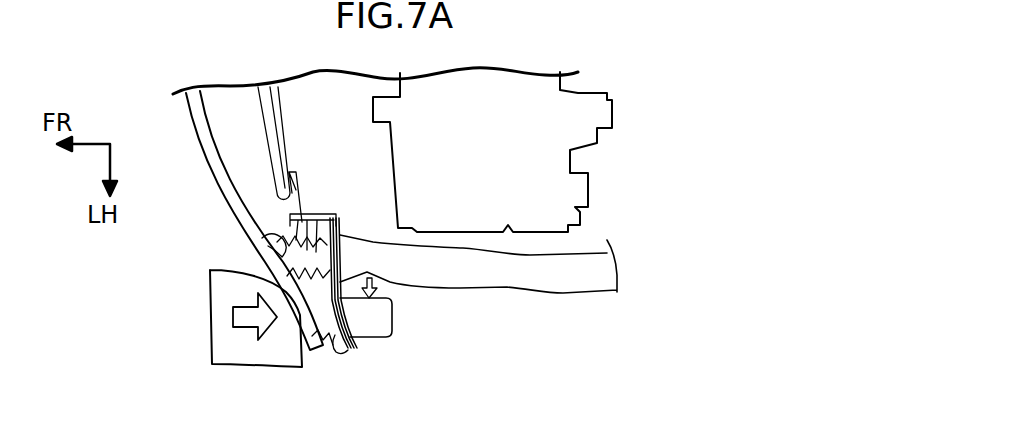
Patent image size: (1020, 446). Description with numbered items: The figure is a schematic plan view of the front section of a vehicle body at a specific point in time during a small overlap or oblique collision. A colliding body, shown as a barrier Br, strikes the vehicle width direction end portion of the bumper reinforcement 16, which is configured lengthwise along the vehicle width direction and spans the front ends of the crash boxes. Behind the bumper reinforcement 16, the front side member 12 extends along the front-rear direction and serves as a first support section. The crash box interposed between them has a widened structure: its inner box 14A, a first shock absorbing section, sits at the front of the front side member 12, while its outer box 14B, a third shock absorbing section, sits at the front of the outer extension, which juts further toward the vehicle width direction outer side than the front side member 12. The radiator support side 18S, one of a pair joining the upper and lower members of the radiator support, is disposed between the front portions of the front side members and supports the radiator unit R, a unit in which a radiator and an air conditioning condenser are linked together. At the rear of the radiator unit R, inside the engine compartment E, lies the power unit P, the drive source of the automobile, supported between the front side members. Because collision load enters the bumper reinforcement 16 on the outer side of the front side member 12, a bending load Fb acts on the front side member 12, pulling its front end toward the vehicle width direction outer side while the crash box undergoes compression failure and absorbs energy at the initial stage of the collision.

The bumper reinforcement 16 is at (208, 166).
The radiator unit R is at (283, 107).
The engine compartment E is at (352, 147).
The radiator support side 18S is at (335, 223).
The inner box 14A is at (281, 240).
The barrier Br is at (210, 302).
The power unit P is at (533, 93).
The front side member 12 is at (506, 287).
The bending load Fb is at (383, 288).
The outer box 14B is at (337, 348).